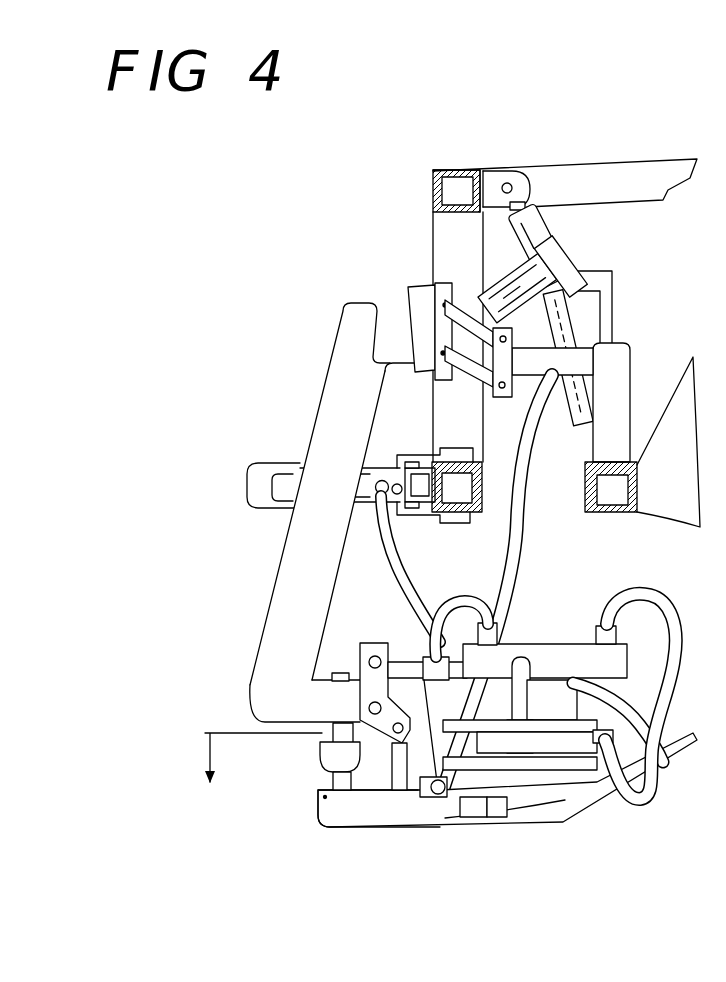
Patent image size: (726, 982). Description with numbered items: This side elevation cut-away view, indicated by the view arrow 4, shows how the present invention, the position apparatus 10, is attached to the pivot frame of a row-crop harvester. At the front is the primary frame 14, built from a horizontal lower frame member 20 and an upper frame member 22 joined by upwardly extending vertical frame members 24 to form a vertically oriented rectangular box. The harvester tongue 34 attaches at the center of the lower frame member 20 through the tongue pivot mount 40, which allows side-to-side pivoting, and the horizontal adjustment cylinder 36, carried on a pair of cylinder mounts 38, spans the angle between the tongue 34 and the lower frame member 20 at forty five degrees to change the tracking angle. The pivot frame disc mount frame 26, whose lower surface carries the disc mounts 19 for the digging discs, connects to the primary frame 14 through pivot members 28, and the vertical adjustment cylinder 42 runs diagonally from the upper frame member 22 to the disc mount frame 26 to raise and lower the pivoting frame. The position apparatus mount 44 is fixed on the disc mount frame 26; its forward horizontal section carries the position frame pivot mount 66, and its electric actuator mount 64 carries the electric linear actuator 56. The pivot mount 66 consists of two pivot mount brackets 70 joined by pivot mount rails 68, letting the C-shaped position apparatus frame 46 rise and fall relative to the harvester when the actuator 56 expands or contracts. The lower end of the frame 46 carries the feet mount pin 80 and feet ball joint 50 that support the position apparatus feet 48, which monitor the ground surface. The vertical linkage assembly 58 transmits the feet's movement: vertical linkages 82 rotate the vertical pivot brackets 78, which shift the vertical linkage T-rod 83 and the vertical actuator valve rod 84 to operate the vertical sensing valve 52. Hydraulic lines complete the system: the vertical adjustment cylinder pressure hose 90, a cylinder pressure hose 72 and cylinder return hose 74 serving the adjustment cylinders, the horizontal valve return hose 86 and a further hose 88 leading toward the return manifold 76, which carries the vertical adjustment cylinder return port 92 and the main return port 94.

The section line 4 is at (260, 778).
The sewing machine 10 is at (283, 325).
The primary frame 14 is at (447, 158).
The disc mounts 19 is at (670, 485).
The lower frame member 20 is at (445, 485).
The upper frame member 22 is at (433, 167).
The vertical frame members 24 is at (433, 222).
The pivot frame disc mount frame 26 is at (636, 463).
The pivot members 28 is at (641, 180).
The harvester tongue 34 is at (257, 463).
The horizontal adjustment cylinder 36 is at (273, 488).
The cylinder mounts 38 is at (500, 170).
The tongue pivot mount 40 is at (440, 505).
The vertical adjustment cylinder 42 is at (528, 205).
The position apparatus mount 44 is at (633, 340).
The position apparatus frame 46 is at (323, 393).
The position apparatus feet 48 is at (323, 827).
The feet ball joint 50 is at (325, 770).
The vertical sensing valve 52 is at (547, 680).
The electric linear actuator 56 is at (500, 272).
The vertical linkage assembly 58 is at (355, 651).
The electric actuator mount 64 is at (622, 275).
The position frame pivot mount 66 is at (400, 282).
The pivot mount rails 68 is at (443, 353).
The pivot mount brackets 70 is at (503, 383).
The cylinder pressure hose 72 is at (397, 545).
The cylinder return hose 74 is at (437, 615).
The return manifold 76 is at (511, 783).
The vertical pivot brackets 78 is at (363, 697).
The feet mount pin 80 is at (332, 677).
The vertical linkages 82 is at (395, 770).
The vertical linkage T-rod 83 is at (430, 630).
The vertical actuator valve rod 84 is at (447, 800).
The horizontal valve return hose 86 is at (657, 800).
The hose loop 88 is at (647, 595).
The vertical adjustment cylinder pressure hose 90 is at (470, 628).
The vertical adjustment cylinder return port 92 is at (433, 797).
The main return port 94 is at (483, 727).